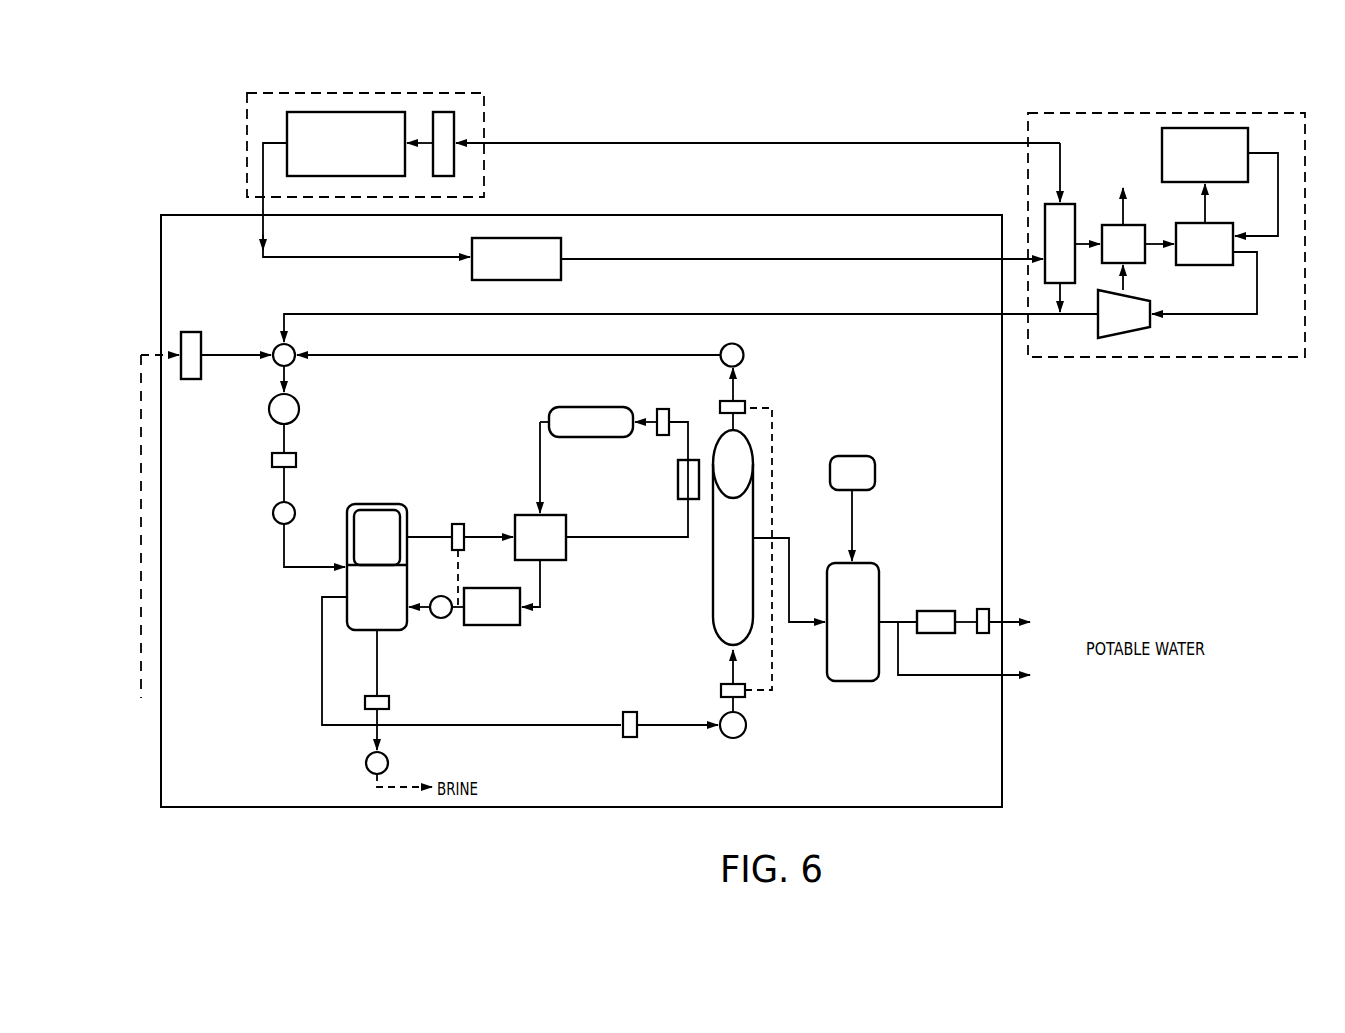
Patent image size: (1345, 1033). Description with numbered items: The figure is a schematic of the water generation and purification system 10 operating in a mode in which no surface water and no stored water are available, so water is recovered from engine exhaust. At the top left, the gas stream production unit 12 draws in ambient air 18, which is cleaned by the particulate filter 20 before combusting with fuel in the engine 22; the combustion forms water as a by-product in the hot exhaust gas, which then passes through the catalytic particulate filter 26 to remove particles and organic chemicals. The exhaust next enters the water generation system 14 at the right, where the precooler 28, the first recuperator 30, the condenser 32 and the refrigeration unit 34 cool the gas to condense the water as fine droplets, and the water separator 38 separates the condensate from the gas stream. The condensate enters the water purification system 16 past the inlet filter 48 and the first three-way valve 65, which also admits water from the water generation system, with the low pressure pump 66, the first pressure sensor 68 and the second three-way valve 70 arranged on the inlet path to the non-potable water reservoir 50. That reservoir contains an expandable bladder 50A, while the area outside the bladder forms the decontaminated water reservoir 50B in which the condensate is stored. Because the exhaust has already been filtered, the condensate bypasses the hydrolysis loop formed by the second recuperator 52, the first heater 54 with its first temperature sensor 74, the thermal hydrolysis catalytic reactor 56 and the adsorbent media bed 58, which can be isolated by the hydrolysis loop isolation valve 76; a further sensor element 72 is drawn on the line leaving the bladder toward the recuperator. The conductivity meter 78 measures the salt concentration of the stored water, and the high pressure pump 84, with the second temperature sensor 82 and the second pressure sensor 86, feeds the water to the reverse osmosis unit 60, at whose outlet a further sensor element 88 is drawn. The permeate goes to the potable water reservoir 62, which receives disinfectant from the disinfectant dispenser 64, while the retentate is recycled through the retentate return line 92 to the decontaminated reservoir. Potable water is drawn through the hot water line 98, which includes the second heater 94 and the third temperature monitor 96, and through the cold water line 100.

The water generation and purification system 10 is at (1270, 769).
The gas stream production unit 12 is at (307, 145).
The water generation system 14 is at (1178, 292).
The water purification system 16 is at (644, 538).
The ambient air 18 is at (623, 143).
The particulate filter 20 is at (455, 130).
The engine 22 is at (346, 144).
The catalytic particulate filter 26 is at (757, 259).
The precooler 28 is at (1067, 204).
The first recuperator 30 is at (1110, 225).
The condenser 32 is at (1201, 249).
The refrigeration unit 34 is at (1220, 182).
The water separator 38 is at (1152, 330).
The inlet filter 48 is at (195, 332).
The non-potable water reservoir 50 is at (352, 541).
The expandable bladder 50A is at (367, 514).
The decontaminated water reservoir 50B is at (348, 592).
The second recuperator 52 is at (553, 560).
The first heater 54 is at (678, 481).
The thermal hydrolysis catalytic reactor 56 is at (549, 414).
The adsorbent media bed 58 is at (500, 625).
The reverse osmosis unit 60 is at (713, 579).
The potable water reservoir 62 is at (852, 681).
The disinfectant dispenser 64 is at (876, 472).
The first three-way valve 65 is at (295, 361).
The low pressure pump 66 is at (269, 410).
The first pressure sensor 68 is at (272, 461).
The second three-way valve 70 is at (273, 516).
The sensor 72 is at (458, 524).
The first temperature sensor 74 is at (655, 430).
The hydrolysis loop isolation valve 76 is at (441, 618).
The conductivity meter 78 is at (389, 705).
The second temperature sensor 82 is at (630, 737).
The high pressure pump 84 is at (743, 735).
The second pressure sensor 86 is at (721, 690).
The sensor 88 is at (746, 406).
The retentate return line 92 is at (415, 358).
The second heater 94 is at (940, 611).
The third temperature monitor 96 is at (980, 634).
The hot water line 98 is at (1052, 612).
The cold water line 100 is at (1055, 688).